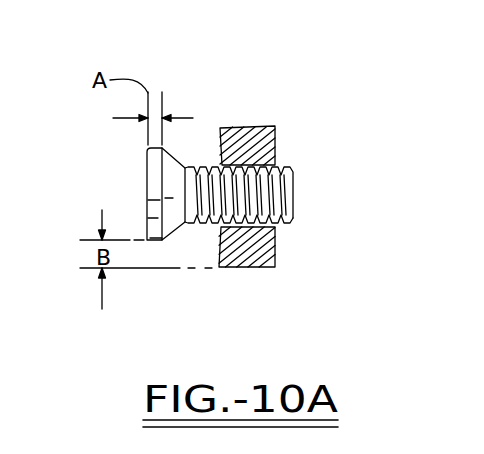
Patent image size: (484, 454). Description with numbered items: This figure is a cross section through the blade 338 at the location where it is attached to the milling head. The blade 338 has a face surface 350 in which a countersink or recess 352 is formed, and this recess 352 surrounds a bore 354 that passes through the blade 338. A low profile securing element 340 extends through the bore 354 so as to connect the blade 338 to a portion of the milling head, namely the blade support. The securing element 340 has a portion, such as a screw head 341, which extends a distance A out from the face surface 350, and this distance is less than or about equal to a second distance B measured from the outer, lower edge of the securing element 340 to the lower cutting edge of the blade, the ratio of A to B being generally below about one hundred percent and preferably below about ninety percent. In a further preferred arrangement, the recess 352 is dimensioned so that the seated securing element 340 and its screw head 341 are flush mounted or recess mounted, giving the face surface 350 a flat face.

The blade 338 is at (252, 127).
The securing element 340 is at (147, 178).
The screw head 341 is at (168, 182).
The face surface 350 is at (219, 257).
The recess 352 is at (222, 160).
The bore 354 is at (260, 221).